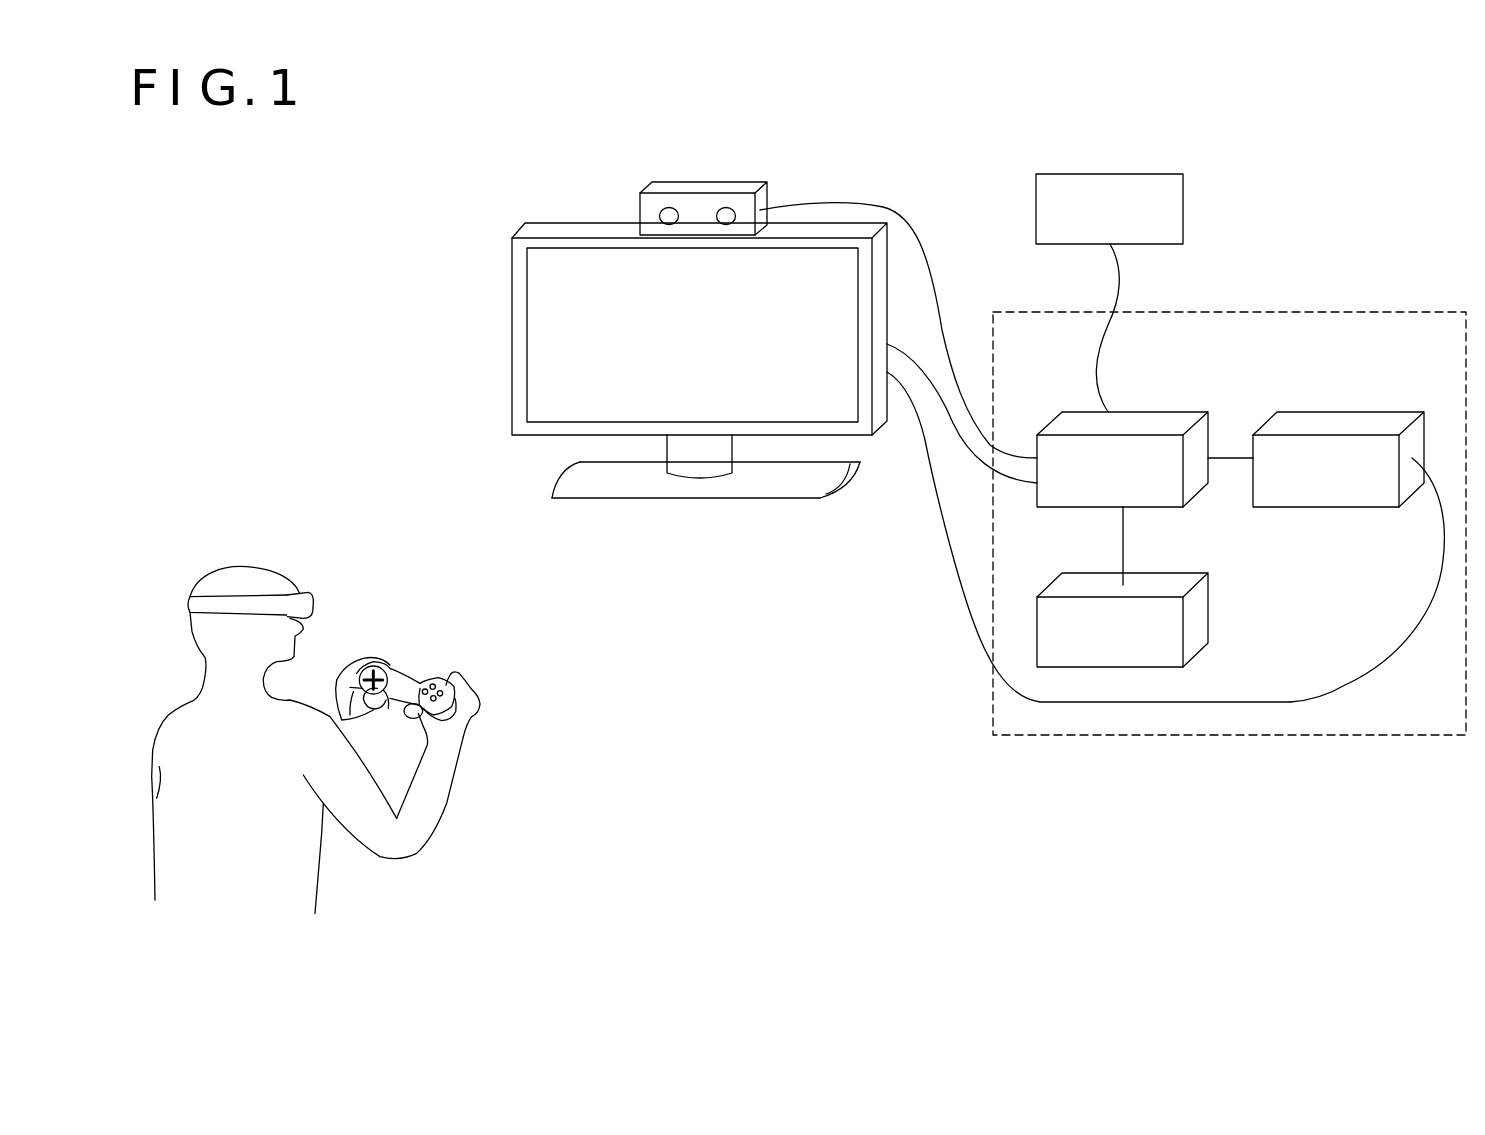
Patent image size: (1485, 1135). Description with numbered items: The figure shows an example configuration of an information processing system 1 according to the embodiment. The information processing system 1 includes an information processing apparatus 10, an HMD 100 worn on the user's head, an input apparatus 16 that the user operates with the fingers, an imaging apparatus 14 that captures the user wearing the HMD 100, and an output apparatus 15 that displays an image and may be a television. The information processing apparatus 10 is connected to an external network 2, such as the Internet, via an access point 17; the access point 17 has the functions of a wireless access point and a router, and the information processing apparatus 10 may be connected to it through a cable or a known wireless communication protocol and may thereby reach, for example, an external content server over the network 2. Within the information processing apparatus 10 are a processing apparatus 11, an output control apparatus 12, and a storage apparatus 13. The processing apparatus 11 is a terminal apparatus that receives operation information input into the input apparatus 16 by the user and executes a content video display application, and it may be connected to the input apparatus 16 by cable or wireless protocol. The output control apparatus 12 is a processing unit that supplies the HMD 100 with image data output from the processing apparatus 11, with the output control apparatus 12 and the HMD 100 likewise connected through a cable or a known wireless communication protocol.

The information processing system 1 is at (792, 960).
The network 2 is at (1112, 174).
The information processing apparatus 10 is at (1321, 312).
The processing apparatus 11 is at (1167, 425).
The output control apparatus 12 is at (1382, 425).
The storage apparatus 13 is at (1167, 585).
The imaging apparatus 14 is at (711, 183).
The output apparatus 15 is at (512, 338).
The input apparatus 16 is at (414, 668).
The access point 17 is at (1036, 208).
The HMD 100 is at (205, 619).